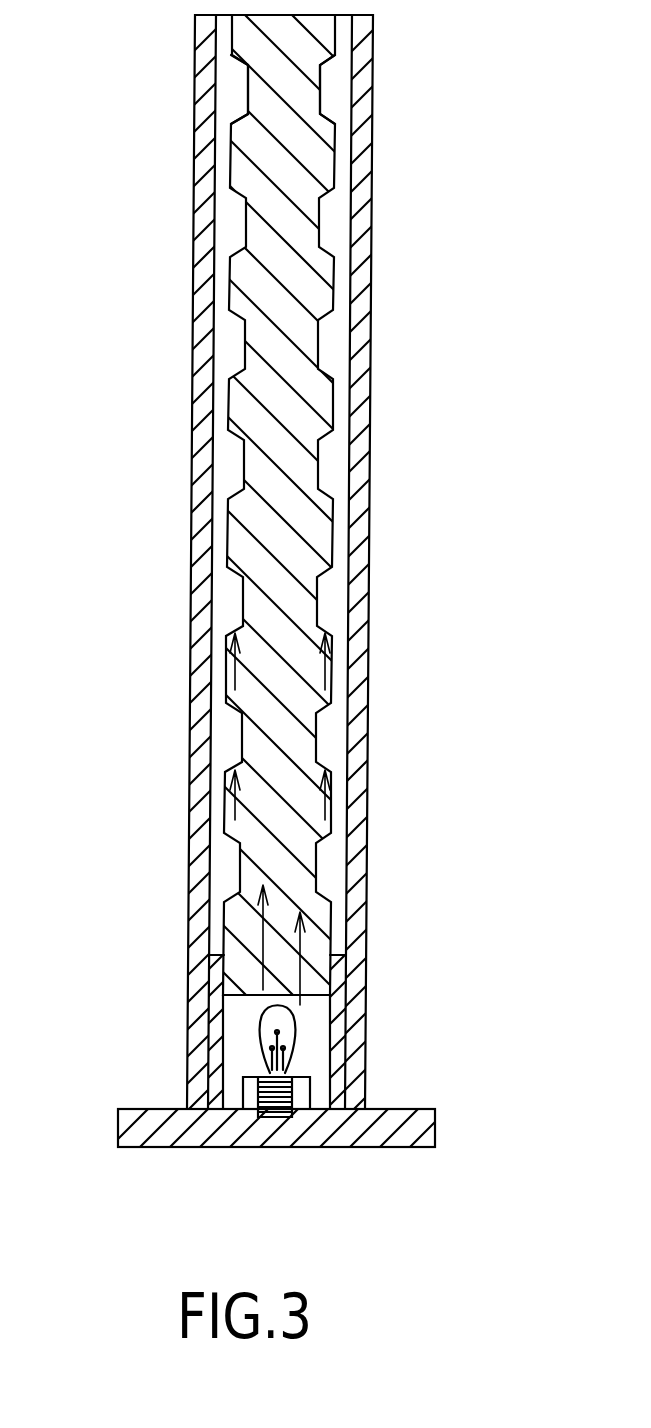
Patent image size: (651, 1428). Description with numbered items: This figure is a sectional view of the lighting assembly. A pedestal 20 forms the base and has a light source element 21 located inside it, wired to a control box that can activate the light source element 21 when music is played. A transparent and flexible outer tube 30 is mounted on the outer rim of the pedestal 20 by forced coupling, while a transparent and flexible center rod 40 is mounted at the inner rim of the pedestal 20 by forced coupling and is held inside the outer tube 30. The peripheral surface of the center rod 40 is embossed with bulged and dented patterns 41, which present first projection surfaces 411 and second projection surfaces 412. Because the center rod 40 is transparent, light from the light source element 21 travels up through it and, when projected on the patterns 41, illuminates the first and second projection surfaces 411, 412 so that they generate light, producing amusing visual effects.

The pedestal 20 is at (325, 1122).
The light source element 21 is at (295, 1017).
The outer tube 30 is at (367, 496).
The center rod 40 is at (250, 286).
The bulged and dented patterns 41 is at (325, 863).
The first projection surfaces 411 is at (243, 760).
The second projection surfaces 412 is at (340, 205).